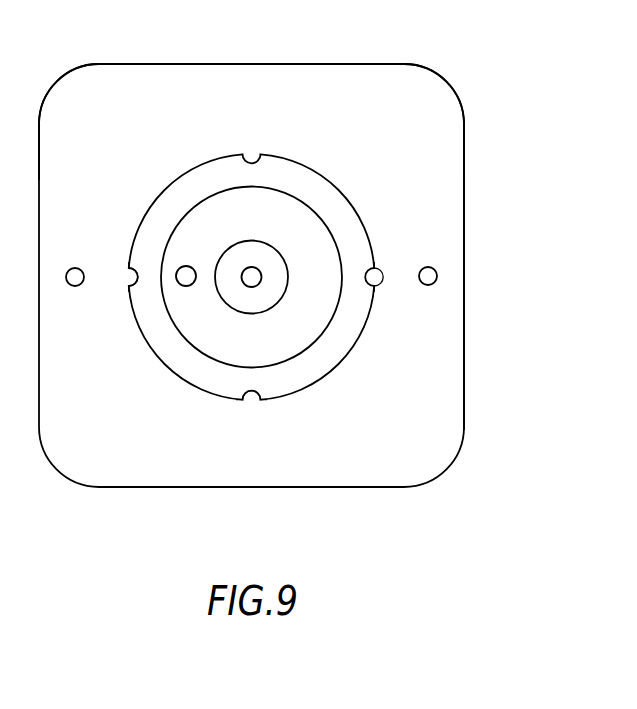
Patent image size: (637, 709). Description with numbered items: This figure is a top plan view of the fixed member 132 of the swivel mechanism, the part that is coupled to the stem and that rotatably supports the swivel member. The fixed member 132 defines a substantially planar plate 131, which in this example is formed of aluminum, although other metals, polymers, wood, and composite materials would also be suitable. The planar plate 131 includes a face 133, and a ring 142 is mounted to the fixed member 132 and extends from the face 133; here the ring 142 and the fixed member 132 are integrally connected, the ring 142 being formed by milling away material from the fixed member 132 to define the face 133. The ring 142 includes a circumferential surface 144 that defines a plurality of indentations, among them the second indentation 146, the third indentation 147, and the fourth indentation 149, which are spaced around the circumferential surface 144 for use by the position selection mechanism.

The planar plate 131 is at (430, 93).
The fixed member 132 is at (486, 147).
The face 133 is at (355, 73).
The ring 142 is at (165, 185).
The circumferential surface 144 is at (340, 186).
The second indentation 146 is at (372, 277).
The third indentation 147 is at (247, 395).
The fourth indentation 149 is at (130, 278).